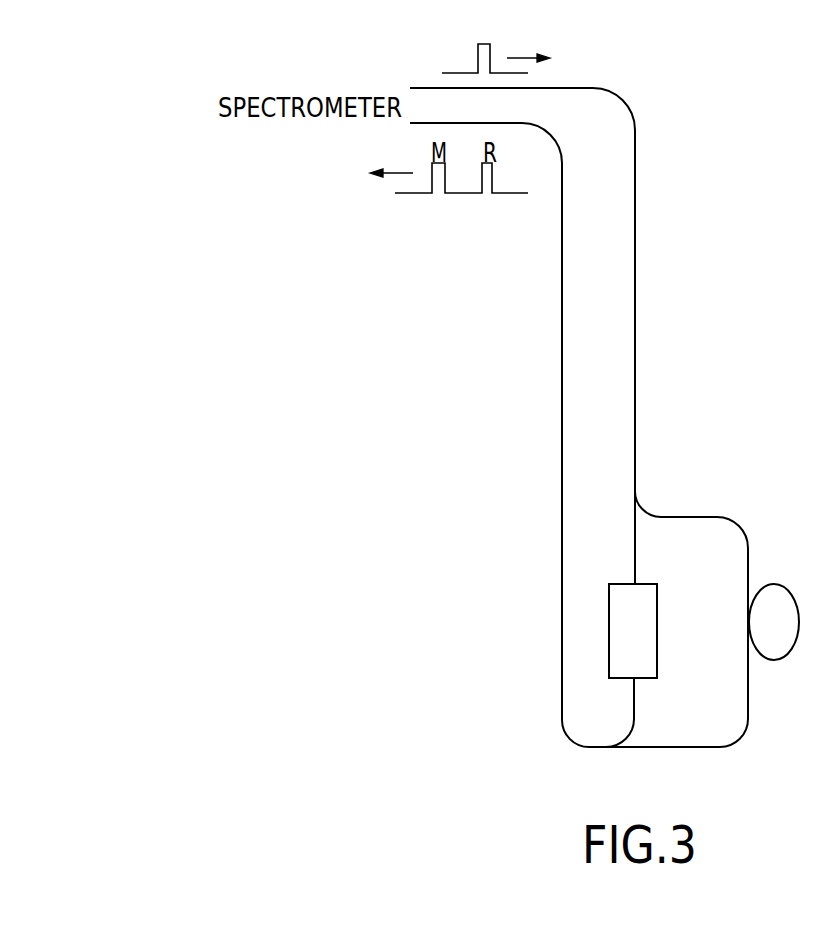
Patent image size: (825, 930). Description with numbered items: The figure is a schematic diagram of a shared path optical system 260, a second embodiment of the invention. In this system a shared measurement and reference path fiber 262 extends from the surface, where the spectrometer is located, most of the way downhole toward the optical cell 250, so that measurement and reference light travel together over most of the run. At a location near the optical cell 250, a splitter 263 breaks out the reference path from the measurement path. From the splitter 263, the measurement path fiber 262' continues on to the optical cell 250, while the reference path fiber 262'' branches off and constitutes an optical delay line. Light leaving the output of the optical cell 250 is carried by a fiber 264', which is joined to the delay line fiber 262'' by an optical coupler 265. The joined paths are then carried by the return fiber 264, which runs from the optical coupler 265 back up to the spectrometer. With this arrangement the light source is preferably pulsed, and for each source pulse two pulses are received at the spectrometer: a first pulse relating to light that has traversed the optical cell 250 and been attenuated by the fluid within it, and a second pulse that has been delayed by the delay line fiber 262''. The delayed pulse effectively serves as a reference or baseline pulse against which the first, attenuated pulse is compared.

The shared path optical system 260 is at (368, 305).
The shared measurement and reference path fiber 262 is at (556, 289).
The measurement path fiber 262' is at (561, 605).
The reference path fiber 262'' is at (739, 629).
The splitter 263 is at (635, 484).
The return fiber 264 is at (486, 421).
The fiber carrying light from the output of the optical cell 264' is at (663, 754).
The optical cell 250 is at (609, 605).
The optical coupler 265 is at (594, 735).